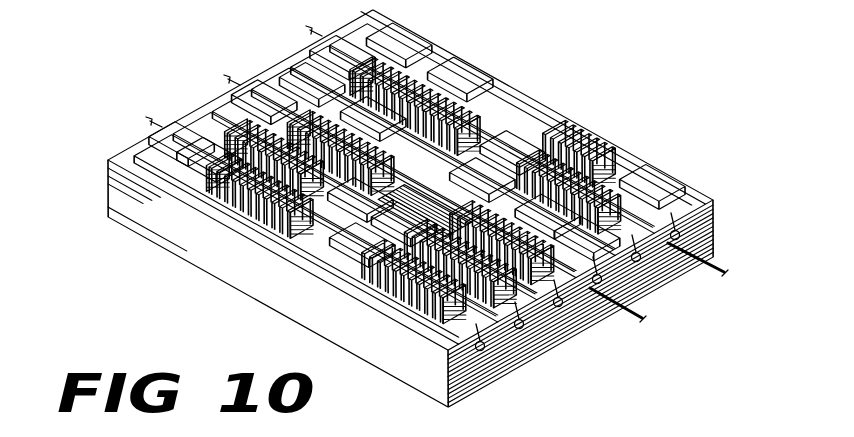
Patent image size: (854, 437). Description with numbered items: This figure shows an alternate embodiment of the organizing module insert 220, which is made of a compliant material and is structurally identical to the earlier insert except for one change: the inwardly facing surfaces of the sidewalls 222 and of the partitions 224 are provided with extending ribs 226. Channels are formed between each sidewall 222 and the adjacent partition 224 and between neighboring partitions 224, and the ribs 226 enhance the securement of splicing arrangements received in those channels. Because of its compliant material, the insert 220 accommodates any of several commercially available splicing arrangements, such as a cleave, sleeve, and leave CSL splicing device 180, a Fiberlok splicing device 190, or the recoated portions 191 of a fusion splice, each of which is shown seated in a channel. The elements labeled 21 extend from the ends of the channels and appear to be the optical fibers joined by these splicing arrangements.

The organizing module insert 220 is at (630, 52).
The sidewalls 222 is at (465, 74).
The partitions 224 is at (265, 128).
The ribs 226 is at (212, 160).
The Fiberlok splicing device 190 is at (462, 186).
The recoated portions 191 is at (358, 247).
The CSL splicing device 180 is at (546, 140).
The lead wire 21 is at (155, 120).